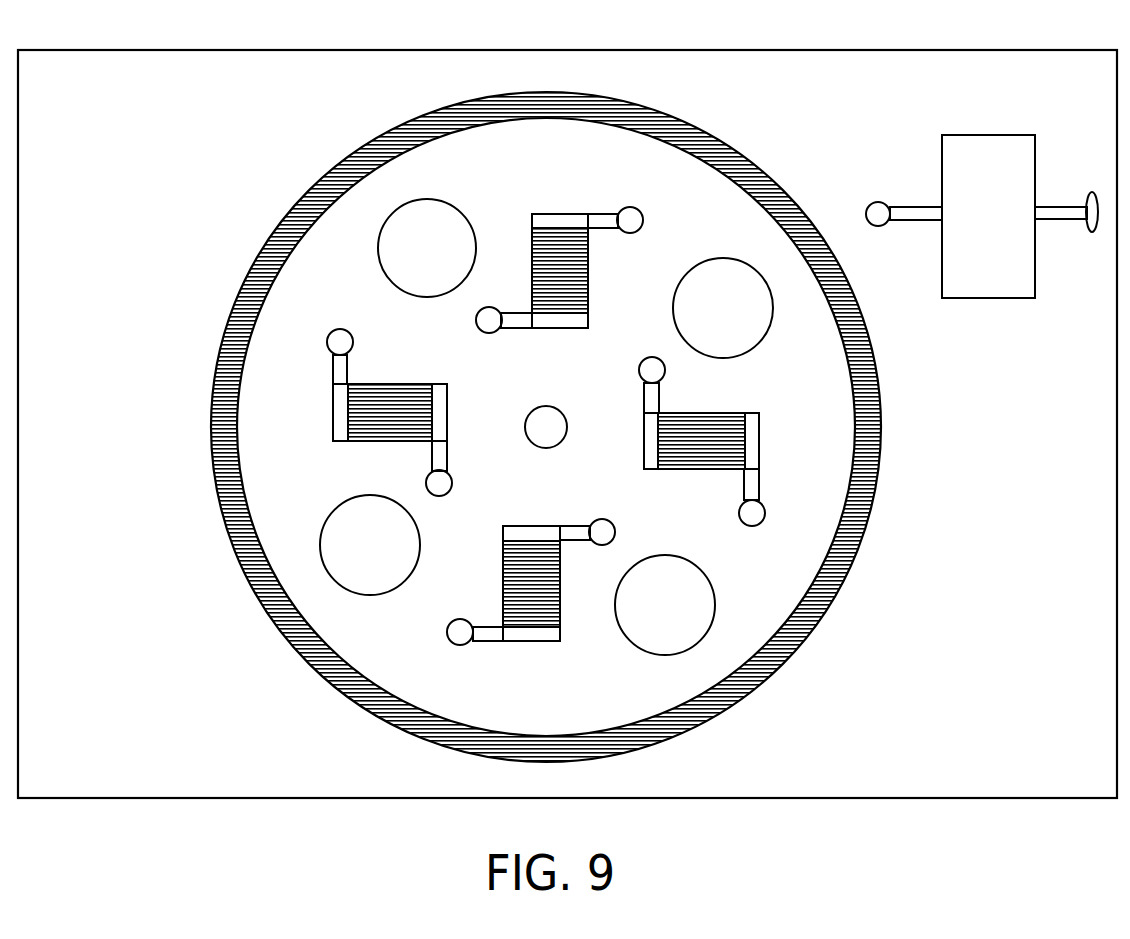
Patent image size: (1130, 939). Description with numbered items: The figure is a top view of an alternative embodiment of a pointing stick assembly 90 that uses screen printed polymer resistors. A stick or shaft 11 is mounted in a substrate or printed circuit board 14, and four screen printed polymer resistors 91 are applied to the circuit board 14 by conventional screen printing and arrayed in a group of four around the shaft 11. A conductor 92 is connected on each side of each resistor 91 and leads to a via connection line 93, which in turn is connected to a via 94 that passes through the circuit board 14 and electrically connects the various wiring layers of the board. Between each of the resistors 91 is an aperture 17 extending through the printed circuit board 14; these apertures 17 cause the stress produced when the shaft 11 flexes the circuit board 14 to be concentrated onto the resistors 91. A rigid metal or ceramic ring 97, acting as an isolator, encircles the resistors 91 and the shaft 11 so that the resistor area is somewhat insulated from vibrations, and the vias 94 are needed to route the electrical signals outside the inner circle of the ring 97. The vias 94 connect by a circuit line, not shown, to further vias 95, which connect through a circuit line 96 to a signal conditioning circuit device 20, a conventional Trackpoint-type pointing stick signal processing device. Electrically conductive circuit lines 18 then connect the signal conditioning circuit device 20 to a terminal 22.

The pointing stick assembly 90 is at (567, 405).
The printed circuit board 14 is at (138, 756).
The ring 97 is at (250, 267).
The aperture 17 is at (428, 198).
The shaft 11 is at (545, 448).
The screen printed polymer resistor 91 is at (380, 442).
The conductor 92 is at (333, 410).
The via connection line 93 is at (333, 365).
The via 94 is at (338, 330).
The signal conditioning circuit device 20 is at (1001, 267).
The circuit line 96 is at (927, 205).
The via 95 is at (872, 203).
The electrically conductive circuit line 18 is at (1052, 205).
The terminal 22 is at (1085, 233).